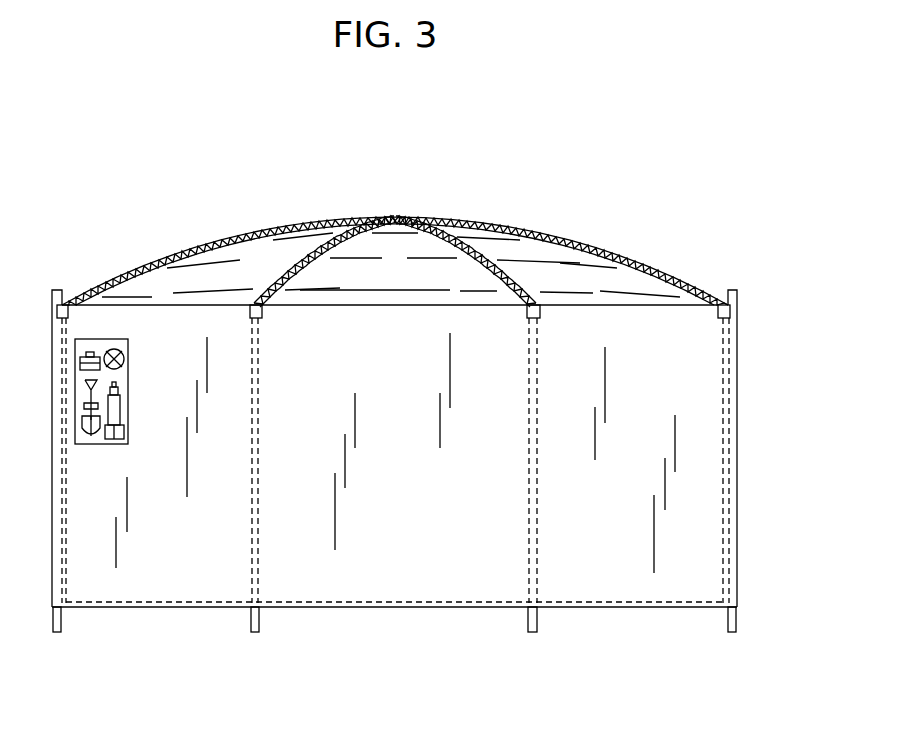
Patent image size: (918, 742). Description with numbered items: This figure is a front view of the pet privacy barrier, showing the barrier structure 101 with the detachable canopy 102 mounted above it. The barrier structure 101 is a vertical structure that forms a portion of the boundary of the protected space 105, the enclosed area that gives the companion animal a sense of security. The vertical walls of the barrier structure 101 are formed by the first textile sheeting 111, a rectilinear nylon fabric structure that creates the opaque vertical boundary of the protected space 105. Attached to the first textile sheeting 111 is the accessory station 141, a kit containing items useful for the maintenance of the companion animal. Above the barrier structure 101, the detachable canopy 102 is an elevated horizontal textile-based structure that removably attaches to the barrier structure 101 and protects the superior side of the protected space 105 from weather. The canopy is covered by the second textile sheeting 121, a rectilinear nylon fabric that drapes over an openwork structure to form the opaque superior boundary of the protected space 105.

The barrier structure 101 is at (733, 416).
The detachable canopy 102 is at (585, 243).
The protected space 105 is at (702, 503).
The first textile sheeting 111 is at (135, 577).
The second textile sheeting 121 is at (508, 243).
The accessory station 141 is at (127, 384).